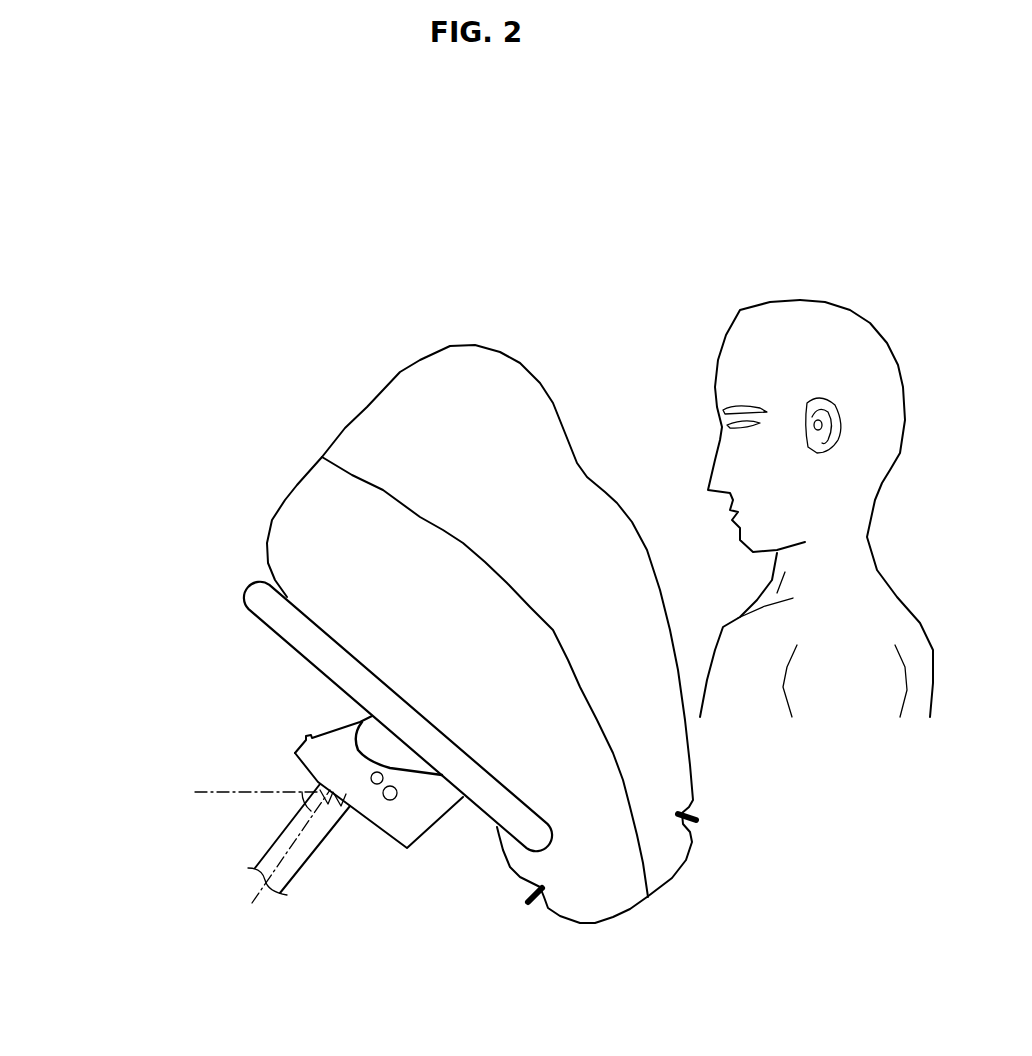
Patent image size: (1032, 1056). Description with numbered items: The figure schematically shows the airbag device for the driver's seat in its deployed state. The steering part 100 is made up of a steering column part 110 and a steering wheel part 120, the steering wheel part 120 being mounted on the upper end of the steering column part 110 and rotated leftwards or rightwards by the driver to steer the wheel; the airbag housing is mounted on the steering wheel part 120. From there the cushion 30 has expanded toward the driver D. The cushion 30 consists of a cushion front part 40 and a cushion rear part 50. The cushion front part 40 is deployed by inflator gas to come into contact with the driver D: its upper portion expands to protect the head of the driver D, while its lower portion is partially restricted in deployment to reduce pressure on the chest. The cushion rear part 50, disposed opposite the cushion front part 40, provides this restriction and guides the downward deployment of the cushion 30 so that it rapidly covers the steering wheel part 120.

The cushion 30 is at (265, 258).
The cushion front part 40 is at (368, 408).
The cushion rear part 50 is at (298, 490).
The steering part 100 is at (88, 702).
The steering column part 110 is at (280, 840).
The steering wheel part 120 is at (273, 613).
The driver D is at (807, 315).